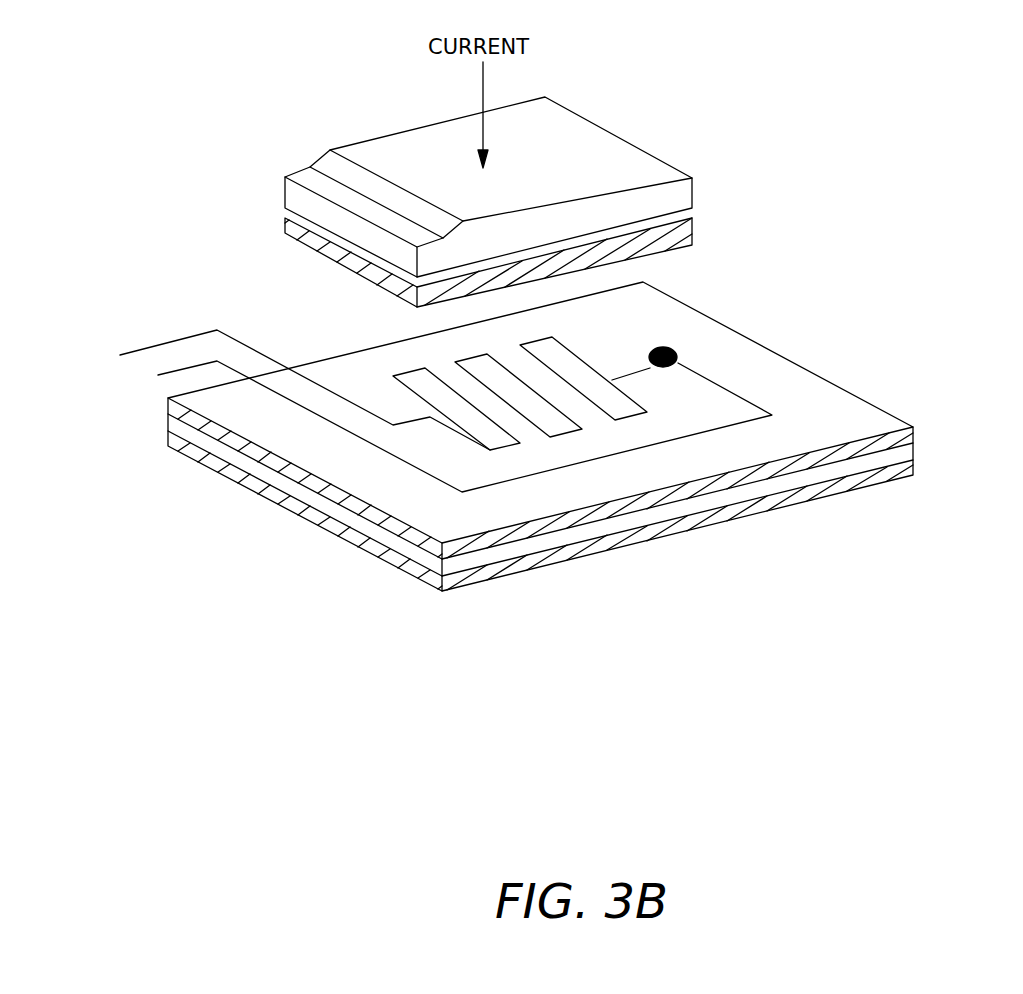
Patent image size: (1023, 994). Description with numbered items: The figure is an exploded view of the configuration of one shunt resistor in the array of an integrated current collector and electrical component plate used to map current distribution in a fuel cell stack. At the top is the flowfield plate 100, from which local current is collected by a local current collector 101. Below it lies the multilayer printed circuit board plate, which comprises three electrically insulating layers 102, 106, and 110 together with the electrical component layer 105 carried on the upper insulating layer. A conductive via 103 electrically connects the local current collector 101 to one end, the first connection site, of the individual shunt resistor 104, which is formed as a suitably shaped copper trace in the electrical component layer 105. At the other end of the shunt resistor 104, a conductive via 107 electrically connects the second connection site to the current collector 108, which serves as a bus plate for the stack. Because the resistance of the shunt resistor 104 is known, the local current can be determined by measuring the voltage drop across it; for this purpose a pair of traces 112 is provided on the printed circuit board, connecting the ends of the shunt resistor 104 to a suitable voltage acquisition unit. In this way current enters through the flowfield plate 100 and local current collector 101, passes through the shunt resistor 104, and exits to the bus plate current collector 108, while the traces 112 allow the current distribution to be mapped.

The flowfield plate 100 is at (680, 195).
The local current collector 101 is at (692, 216).
The electrically insulating layer 102 is at (287, 227).
The conductive via 103 is at (498, 240).
The shunt resistor 104 is at (507, 353).
The electrical component layer 105 is at (579, 436).
The electrically insulating layer 106 is at (914, 433).
The conductive via 107 is at (671, 348).
The current collector 108 is at (914, 451).
The electrically insulating layer 110 is at (848, 483).
The pair of traces 112 is at (338, 392).